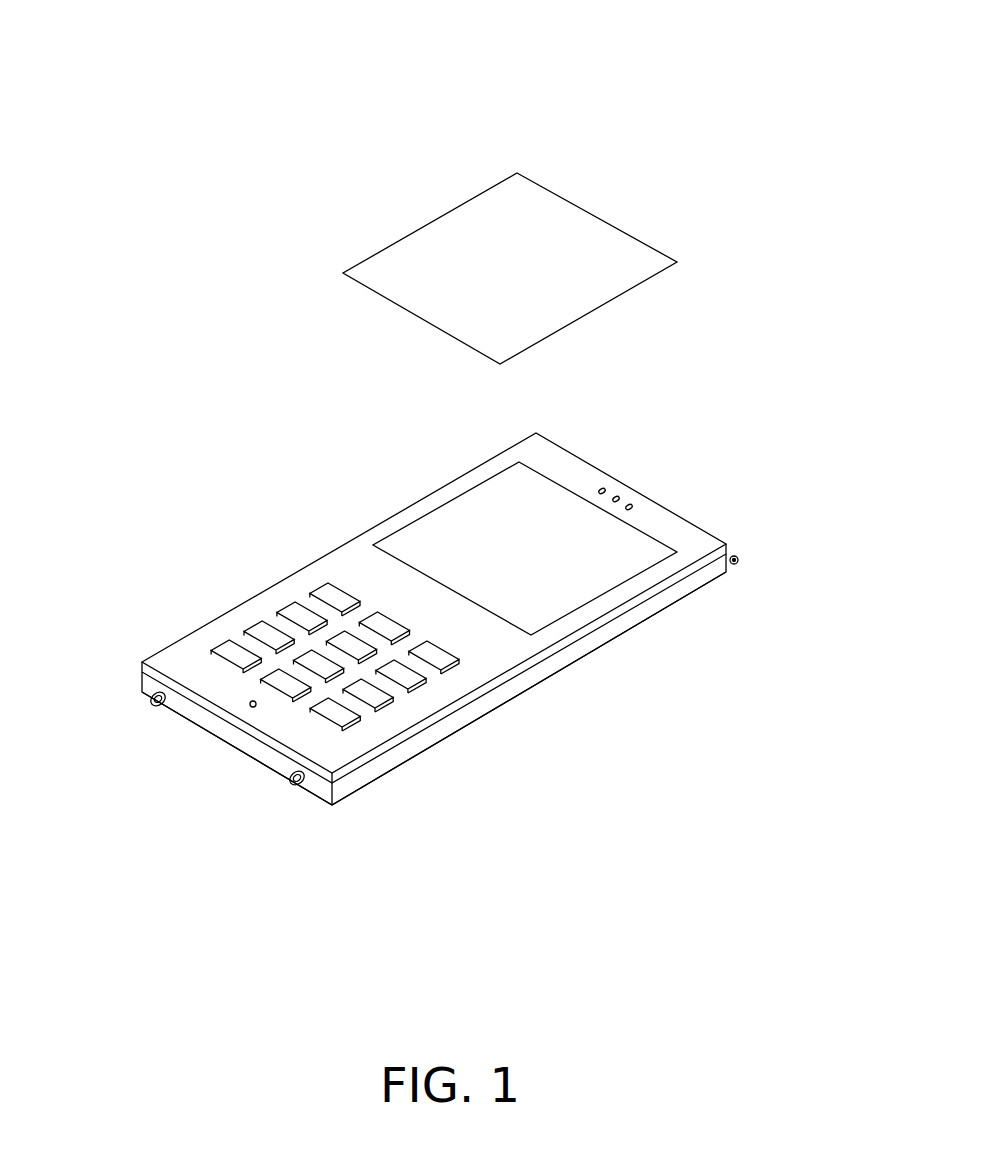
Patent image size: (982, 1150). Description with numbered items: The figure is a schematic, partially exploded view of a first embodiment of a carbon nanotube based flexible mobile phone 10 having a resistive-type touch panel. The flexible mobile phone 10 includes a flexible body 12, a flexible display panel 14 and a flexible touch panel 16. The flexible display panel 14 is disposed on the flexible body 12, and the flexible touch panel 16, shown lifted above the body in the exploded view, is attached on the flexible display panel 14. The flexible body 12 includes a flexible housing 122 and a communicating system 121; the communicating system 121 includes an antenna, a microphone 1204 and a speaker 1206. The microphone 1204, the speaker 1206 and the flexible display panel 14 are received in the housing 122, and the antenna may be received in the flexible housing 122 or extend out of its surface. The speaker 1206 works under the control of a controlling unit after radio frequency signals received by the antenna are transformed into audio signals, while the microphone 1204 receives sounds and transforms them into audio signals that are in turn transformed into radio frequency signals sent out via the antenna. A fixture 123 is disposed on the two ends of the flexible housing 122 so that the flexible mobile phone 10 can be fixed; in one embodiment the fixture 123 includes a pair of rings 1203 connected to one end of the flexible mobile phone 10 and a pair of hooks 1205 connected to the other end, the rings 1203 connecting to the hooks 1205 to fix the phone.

The carbon nanotube based flexible mobile phone 10 is at (415, 80).
The flexible body 12 is at (345, 528).
The communicating system 121 is at (167, 520).
The flexible housing 122 is at (275, 753).
The fixture 123 is at (822, 677).
The flexible display panel 14 is at (453, 520).
The flexible touch panel 16 is at (563, 247).
The rings 1203 is at (300, 784).
The microphone 1204 is at (251, 701).
The hooks 1205 is at (735, 564).
The speaker 1206 is at (608, 500).